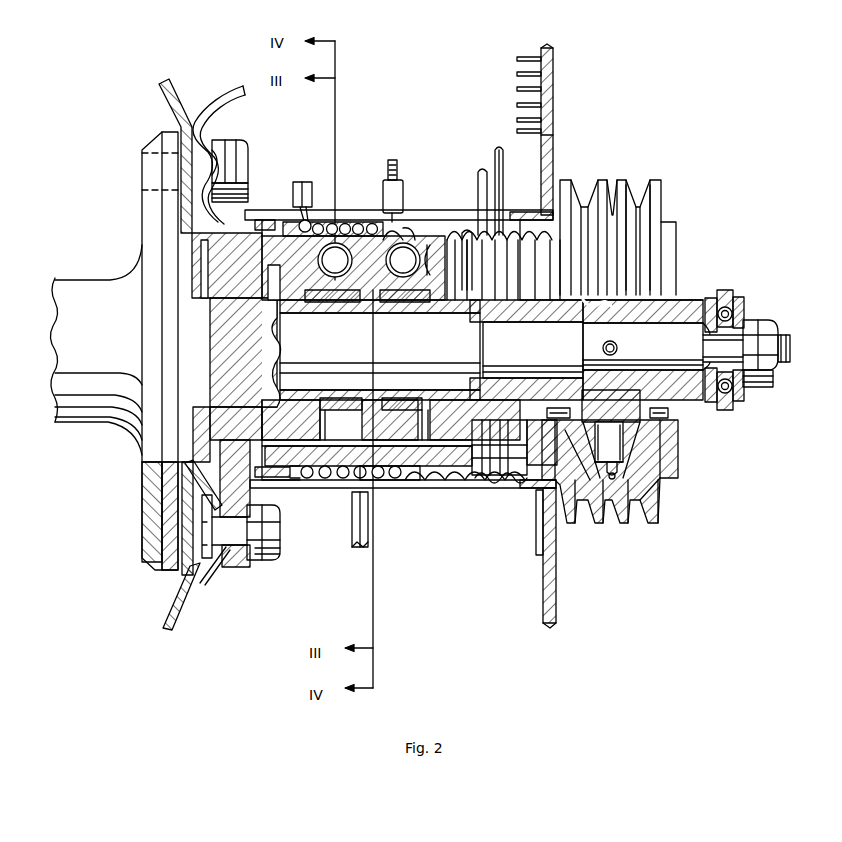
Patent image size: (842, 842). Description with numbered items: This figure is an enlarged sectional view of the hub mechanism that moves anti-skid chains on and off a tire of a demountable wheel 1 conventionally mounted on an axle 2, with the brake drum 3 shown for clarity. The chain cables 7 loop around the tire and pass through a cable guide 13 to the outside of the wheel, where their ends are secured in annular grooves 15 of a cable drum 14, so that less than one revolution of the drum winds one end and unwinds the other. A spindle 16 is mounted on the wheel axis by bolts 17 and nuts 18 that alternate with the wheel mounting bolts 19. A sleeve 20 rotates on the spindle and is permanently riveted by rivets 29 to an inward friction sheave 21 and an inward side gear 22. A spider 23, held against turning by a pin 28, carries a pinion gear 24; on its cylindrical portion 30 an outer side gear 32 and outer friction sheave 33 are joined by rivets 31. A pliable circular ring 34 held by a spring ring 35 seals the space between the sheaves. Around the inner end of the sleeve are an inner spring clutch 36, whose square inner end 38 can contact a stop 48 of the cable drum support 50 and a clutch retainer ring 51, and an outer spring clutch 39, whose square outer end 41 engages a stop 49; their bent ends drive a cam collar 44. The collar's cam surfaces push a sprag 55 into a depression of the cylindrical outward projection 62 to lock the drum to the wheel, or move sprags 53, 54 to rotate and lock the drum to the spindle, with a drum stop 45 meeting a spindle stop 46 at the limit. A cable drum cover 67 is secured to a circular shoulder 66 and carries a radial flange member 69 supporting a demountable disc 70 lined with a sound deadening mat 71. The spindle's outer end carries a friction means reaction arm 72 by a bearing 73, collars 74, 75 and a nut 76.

The demountable wheel 1 is at (215, 95).
The axle 2 is at (68, 280).
The brake drum 3 is at (165, 102).
The chain cables 7 is at (390, 168).
The cable guide 13 is at (305, 183).
The cable drum 14 is at (290, 225).
The annular grooves 15 is at (500, 480).
The spindle 16 is at (776, 372).
The bolts 17 is at (202, 520).
The nuts 18 is at (262, 560).
The mounting bolts 19 is at (227, 140).
The sleeve 20 is at (520, 324).
The inward friction sheave 21 is at (575, 190).
The inward side gear 22 is at (570, 440).
The spider 23 is at (658, 325).
The pinion gear 24 is at (640, 452).
The pin 28 is at (618, 349).
The rivets 29 is at (565, 408).
The cylindrical portion 30 is at (690, 300).
The rivets 31 is at (670, 414).
The outer side gear 32 is at (665, 438).
The outer friction sheave 33 is at (662, 206).
The circular ring 34 is at (611, 483).
The spring ring 35 is at (640, 470).
The inner spring clutch 36 is at (343, 400).
The inner end 38 is at (313, 400).
The outer spring clutch 39 is at (395, 400).
The outer end 41 is at (428, 400).
The cam collar 44 is at (382, 283).
The drum stop 45 is at (300, 472).
The spindle stop 46 is at (288, 482).
The stop 48 is at (302, 400).
The stop 49 is at (448, 420).
The cable drum support 50 is at (415, 458).
The clutch retainer ring 51 is at (290, 275).
The sprag 53 is at (322, 117).
The sprag 54 is at (426, 97).
The sprag 55 is at (380, 470).
The cylindrical outward projection 62 is at (443, 482).
The circular shoulder 66 is at (275, 480).
The cable drum cover 67 is at (428, 210).
The radial flange member 69 is at (545, 550).
The demountable disc 70 is at (556, 90).
The sound deadening mat 71 is at (520, 100).
The friction means reaction arm 72 is at (733, 292).
The bearing 73 is at (731, 410).
The collar 74 is at (712, 298).
The collar 75 is at (745, 302).
The nut 76 is at (758, 388).